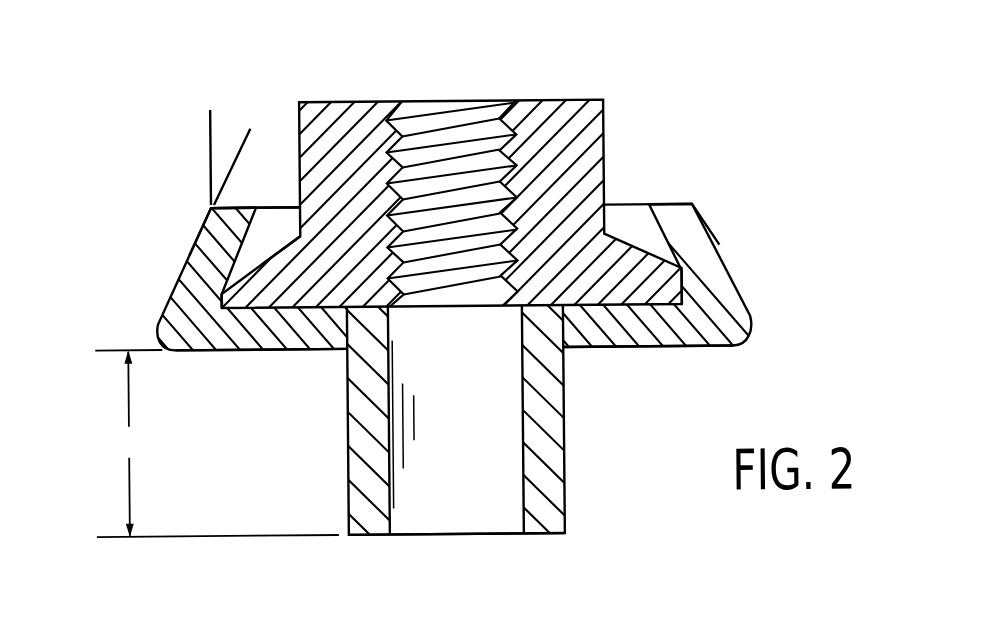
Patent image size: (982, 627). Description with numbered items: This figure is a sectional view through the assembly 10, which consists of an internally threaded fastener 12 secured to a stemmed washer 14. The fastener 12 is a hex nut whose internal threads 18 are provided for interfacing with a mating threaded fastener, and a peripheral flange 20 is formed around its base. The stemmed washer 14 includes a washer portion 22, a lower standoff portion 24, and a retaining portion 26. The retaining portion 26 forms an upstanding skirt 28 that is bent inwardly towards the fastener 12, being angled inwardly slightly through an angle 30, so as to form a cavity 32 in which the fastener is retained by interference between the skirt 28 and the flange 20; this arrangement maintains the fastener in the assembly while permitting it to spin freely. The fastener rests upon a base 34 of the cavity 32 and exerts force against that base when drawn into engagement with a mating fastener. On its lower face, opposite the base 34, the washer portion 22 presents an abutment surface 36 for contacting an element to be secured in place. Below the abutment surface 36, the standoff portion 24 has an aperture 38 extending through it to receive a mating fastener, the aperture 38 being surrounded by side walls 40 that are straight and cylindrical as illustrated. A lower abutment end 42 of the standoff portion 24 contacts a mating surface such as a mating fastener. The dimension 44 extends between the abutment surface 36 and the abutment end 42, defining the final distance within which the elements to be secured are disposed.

The assembly 10 is at (196, 176).
The internally threaded fastener 12 is at (607, 106).
The stemmed washer 14 is at (749, 341).
The internal threads 18 is at (438, 103).
The peripheral flange 20 is at (674, 296).
The washer portion 22 is at (647, 340).
The lower standoff portion 24 is at (346, 491).
The retaining portion 26 is at (200, 237).
The upstanding skirt 28 is at (705, 214).
The angle 30 is at (221, 138).
The cavity 32 is at (266, 233).
The base 34 is at (252, 305).
The abutment surface 36 is at (262, 349).
The aperture 38 is at (521, 432).
The side walls 40 is at (542, 481).
The lower abutment end 42 is at (538, 535).
The dimension 44 is at (217, 442).